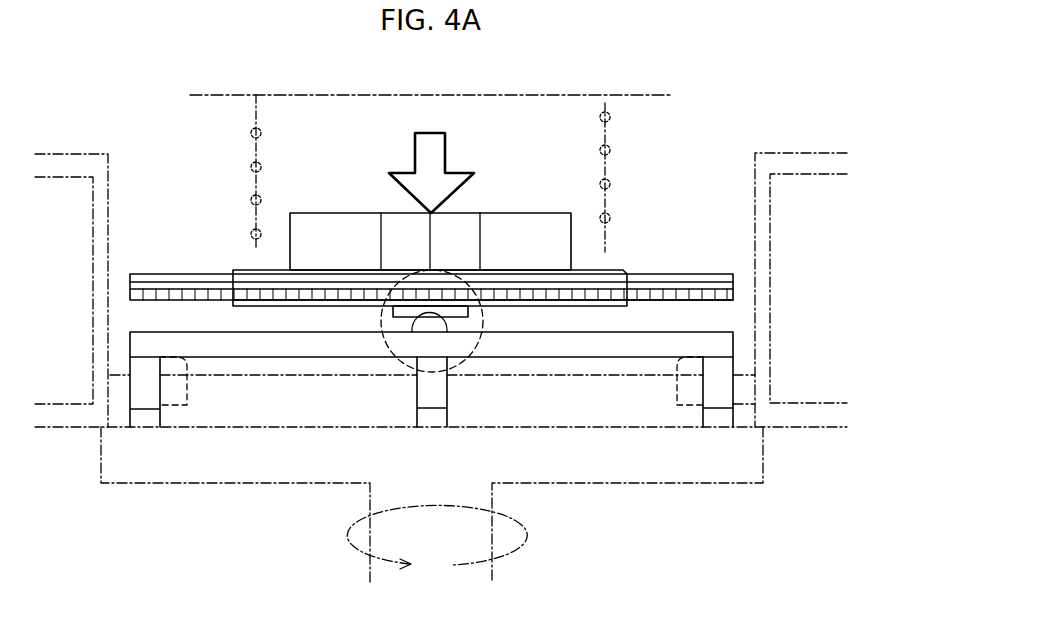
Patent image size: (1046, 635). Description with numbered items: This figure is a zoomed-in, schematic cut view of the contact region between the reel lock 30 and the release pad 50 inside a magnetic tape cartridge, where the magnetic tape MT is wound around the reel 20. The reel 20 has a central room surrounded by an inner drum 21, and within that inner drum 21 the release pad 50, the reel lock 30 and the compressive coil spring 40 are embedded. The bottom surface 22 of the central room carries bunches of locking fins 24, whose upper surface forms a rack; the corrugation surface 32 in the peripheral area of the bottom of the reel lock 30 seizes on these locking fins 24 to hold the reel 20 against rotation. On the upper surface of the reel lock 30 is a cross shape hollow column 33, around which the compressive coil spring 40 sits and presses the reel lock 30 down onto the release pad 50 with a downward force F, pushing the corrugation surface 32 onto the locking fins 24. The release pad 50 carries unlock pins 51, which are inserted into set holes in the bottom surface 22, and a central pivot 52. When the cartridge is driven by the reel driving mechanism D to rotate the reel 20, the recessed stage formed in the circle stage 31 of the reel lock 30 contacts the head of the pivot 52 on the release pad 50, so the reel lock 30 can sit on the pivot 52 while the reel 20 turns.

The reel 20 is at (765, 407).
The inner drum 21 is at (109, 195).
The bottom surface 22 is at (687, 427).
The locking fins 24 is at (118, 332).
The reel lock 30 is at (660, 268).
The circle stage 31 is at (472, 306).
The corrugation surface 32 is at (129, 296).
The cross shape hollow column 33 is at (322, 234).
The compressive coil spring 40 is at (253, 134).
The release pad 50 is at (736, 362).
The unlock pins 51 is at (428, 392).
The pivot 52 is at (442, 318).
The reel driving mechanism D is at (682, 462).
The force F is at (431, 158).
The magnetic tape MT is at (806, 200).